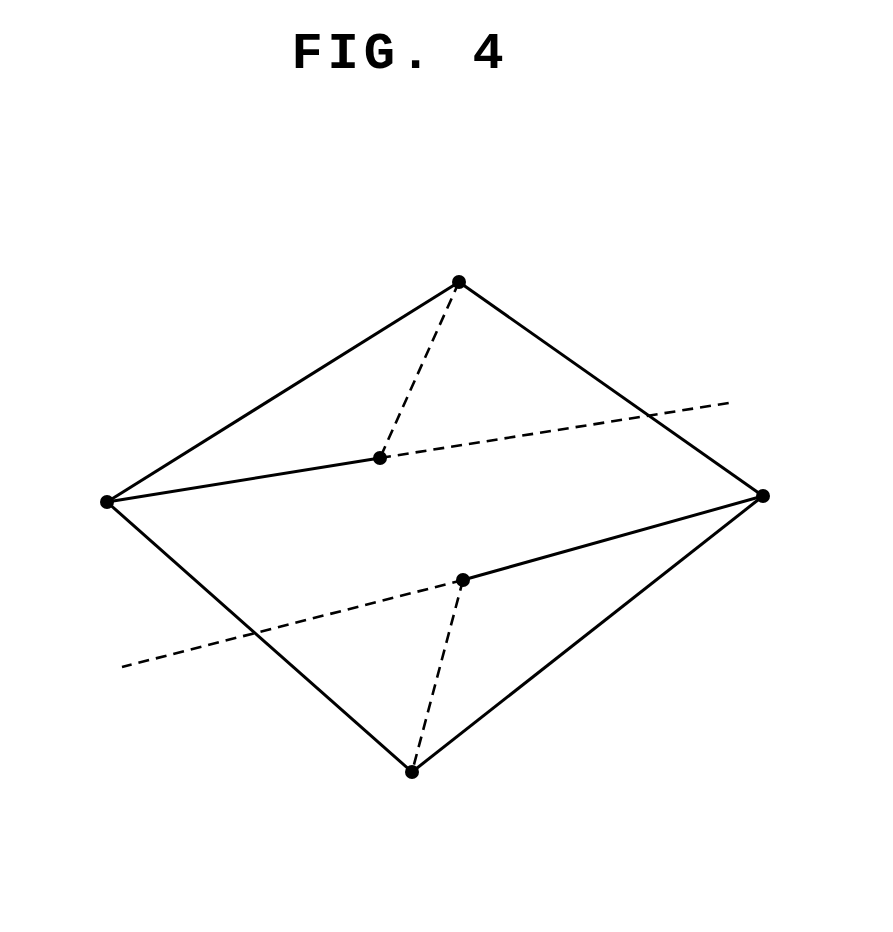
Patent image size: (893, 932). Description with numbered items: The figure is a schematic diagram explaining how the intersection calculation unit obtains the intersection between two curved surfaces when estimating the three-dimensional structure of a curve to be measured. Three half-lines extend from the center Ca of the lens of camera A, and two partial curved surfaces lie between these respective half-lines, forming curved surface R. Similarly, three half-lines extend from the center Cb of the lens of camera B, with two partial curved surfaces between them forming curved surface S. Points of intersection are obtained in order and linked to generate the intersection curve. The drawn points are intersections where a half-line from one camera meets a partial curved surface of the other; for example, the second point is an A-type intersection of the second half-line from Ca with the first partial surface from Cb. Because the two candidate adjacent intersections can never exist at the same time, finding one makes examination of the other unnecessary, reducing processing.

The center of the lens of camera A Ca is at (85, 504).
The center of the lens of camera B Cb is at (786, 497).